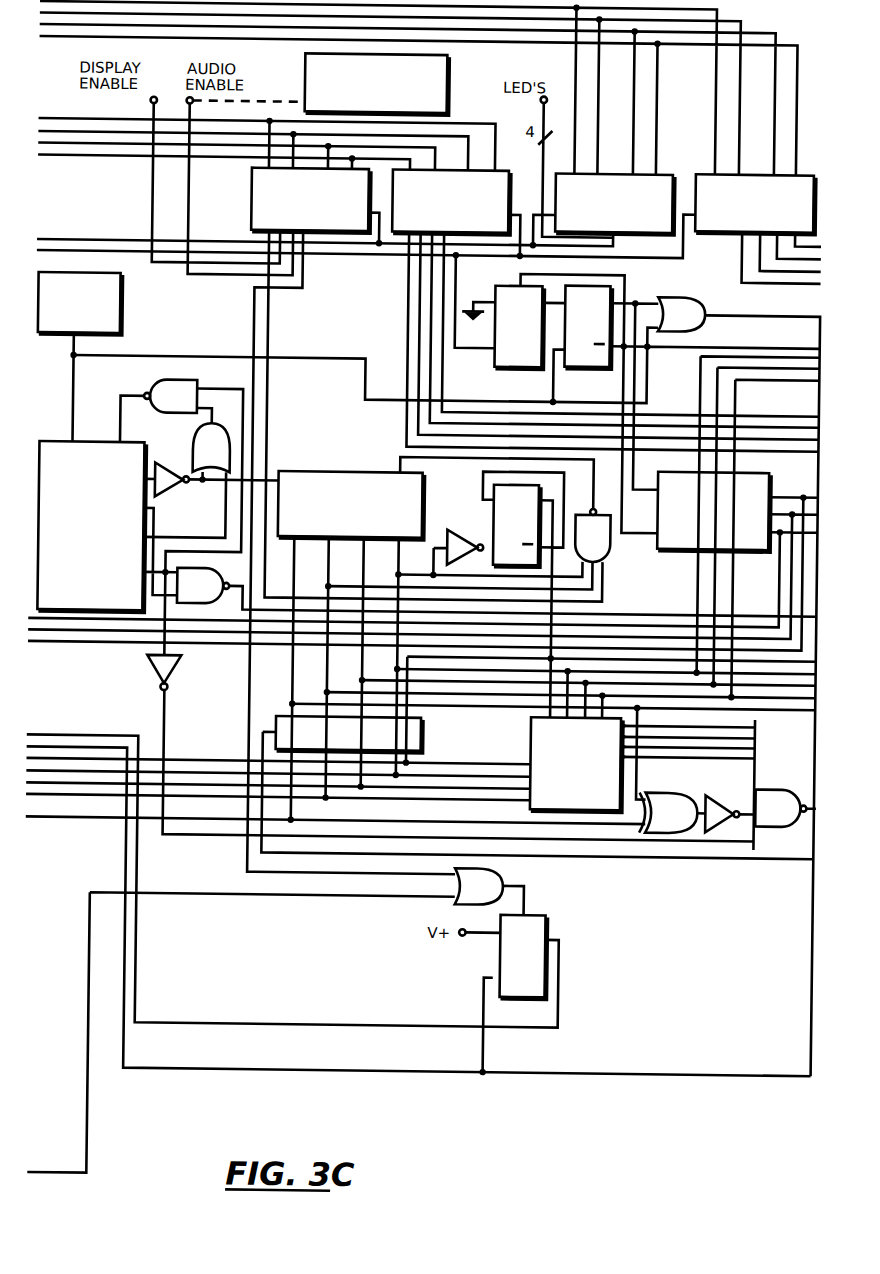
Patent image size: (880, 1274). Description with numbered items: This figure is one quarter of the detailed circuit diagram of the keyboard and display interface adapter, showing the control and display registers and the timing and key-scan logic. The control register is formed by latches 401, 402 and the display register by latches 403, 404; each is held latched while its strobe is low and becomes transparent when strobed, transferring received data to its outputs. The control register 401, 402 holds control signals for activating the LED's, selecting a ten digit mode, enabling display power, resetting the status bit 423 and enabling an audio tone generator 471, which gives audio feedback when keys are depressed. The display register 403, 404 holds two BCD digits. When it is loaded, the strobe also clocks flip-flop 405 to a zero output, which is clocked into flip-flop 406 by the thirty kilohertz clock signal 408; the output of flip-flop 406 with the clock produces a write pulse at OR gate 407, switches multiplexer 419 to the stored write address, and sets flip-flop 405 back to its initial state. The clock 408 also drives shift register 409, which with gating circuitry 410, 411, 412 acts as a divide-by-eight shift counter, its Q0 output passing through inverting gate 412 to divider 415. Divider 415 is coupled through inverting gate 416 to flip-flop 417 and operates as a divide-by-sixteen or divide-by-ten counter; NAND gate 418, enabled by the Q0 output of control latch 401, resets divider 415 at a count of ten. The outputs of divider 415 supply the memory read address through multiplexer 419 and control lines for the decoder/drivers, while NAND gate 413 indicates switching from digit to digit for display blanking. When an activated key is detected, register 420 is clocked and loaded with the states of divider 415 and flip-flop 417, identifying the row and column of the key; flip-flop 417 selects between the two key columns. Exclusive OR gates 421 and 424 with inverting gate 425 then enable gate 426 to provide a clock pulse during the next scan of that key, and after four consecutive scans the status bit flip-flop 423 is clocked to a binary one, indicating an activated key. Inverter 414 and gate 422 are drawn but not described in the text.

The control register latch 401 is at (253, 188).
The control register latch 402 is at (627, 233).
The display register latch 403 is at (518, 160).
The display register latch 404 is at (702, 167).
The flip-flop 405 is at (519, 364).
The flip-flop 406 is at (589, 364).
The OR gate 407 is at (708, 309).
The 30 KHz clock signal 408 is at (126, 302).
The shift register 409 is at (99, 441).
The gating circuitry 410 is at (157, 386).
The gating circuitry 411 is at (198, 447).
The inverting gate 412 is at (174, 495).
The NAND gate 413 is at (203, 586).
The inverter 414 is at (156, 668).
The divider 415 is at (318, 468).
The inverting gate 416 is at (459, 537).
The flip-flop 417 is at (489, 494).
The NAND gate 418 is at (618, 556).
The multiplexer 419 is at (775, 465).
The register 420 is at (431, 722).
The exclusive OR gate 421 is at (540, 745).
The OR gate 422 is at (513, 882).
The status bit flip-flop 423 is at (559, 912).
The exclusive OR gate 424 is at (671, 790).
The inverting gate 425 is at (724, 790).
The gate 426 is at (791, 784).
The audio tone generator 471 is at (450, 73).